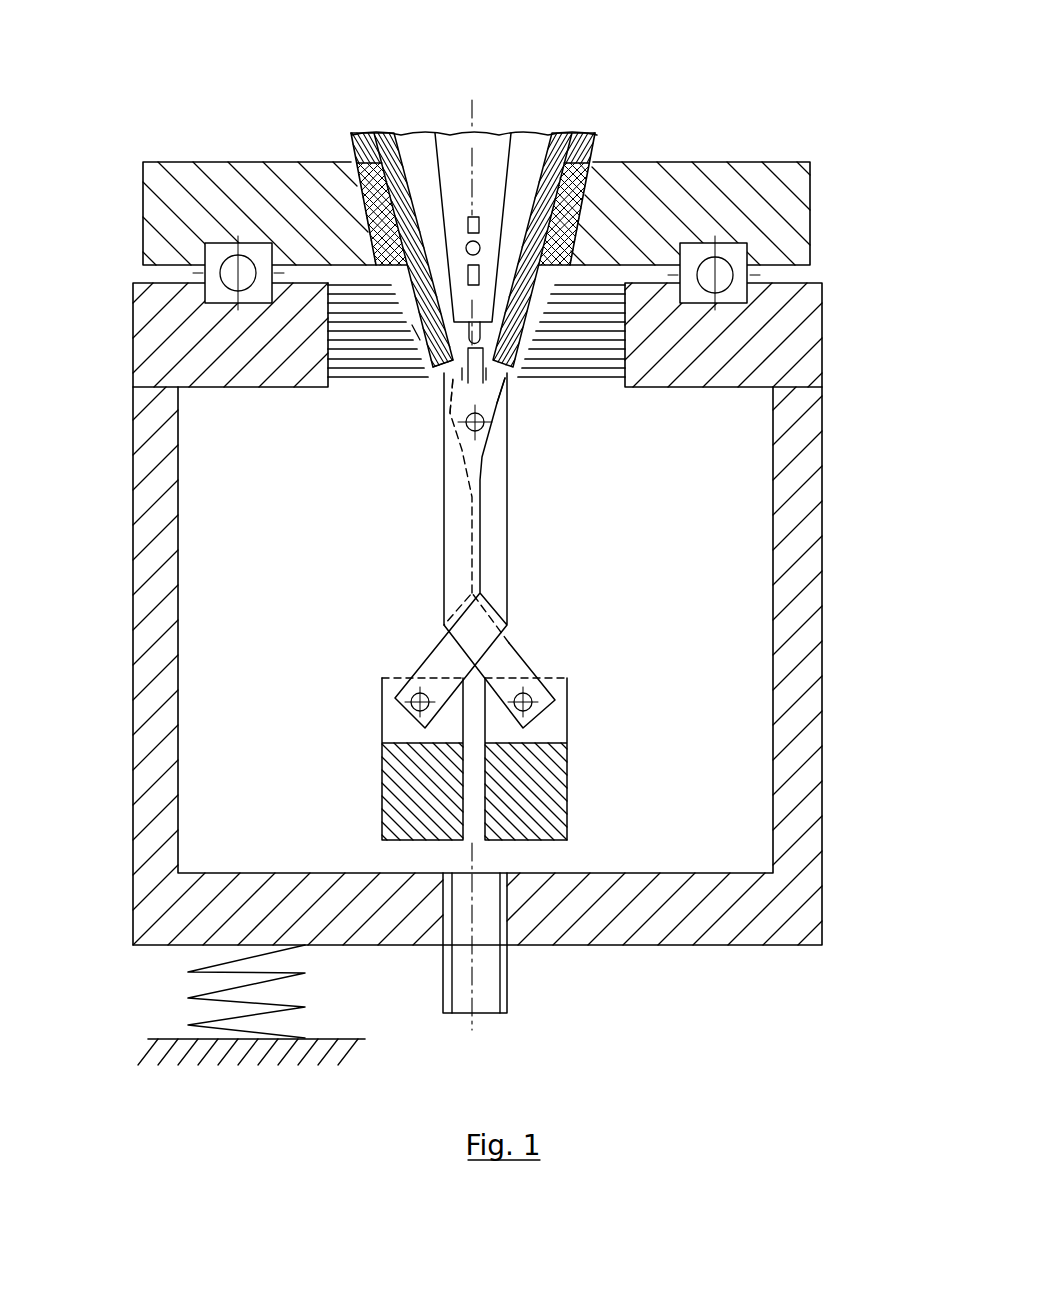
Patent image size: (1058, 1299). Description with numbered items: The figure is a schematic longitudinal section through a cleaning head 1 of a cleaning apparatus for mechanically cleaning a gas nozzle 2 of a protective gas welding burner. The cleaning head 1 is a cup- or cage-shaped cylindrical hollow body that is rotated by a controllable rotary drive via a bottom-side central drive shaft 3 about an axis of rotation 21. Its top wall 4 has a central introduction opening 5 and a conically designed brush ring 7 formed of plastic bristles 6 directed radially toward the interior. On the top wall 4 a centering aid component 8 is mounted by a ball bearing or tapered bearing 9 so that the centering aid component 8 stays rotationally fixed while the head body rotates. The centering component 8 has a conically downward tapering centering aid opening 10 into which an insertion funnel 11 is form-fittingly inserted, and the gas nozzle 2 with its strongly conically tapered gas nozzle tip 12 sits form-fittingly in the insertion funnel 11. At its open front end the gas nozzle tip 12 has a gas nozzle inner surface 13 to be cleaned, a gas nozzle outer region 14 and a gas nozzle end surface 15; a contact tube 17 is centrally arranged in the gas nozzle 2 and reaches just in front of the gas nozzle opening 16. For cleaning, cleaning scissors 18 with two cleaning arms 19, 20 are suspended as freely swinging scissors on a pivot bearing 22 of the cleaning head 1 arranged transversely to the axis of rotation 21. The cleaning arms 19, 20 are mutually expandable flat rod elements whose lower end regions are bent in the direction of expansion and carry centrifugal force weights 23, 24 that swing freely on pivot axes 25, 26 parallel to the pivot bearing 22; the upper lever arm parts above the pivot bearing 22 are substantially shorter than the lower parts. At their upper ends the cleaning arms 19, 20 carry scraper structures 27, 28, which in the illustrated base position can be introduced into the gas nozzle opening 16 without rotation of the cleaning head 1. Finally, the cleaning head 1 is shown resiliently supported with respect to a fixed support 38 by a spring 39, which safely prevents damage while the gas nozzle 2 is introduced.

The cleaning head 1 is at (845, 548).
The gas nozzle 2 is at (414, 98).
The central drive shaft 3 is at (487, 973).
The top wall 4 is at (785, 344).
The central introduction opening 5 is at (598, 400).
The plastic bristles 6 is at (355, 381).
The brush ring 7 is at (290, 333).
The centering aid component 8 is at (790, 207).
The ball bearing or tapered bearing 9 is at (719, 270).
The centering aid opening 10 is at (598, 213).
The insertion funnel 11 is at (575, 183).
The gas nozzle tip 12 is at (410, 165).
The gas nozzle inner surface 13 is at (441, 357).
The gas nozzle outer region 14 is at (418, 330).
The gas nozzle end surface 15 is at (452, 372).
The gas nozzle opening 16 is at (497, 372).
The contact tube 17 is at (498, 170).
The cleaning scissors 18 is at (614, 556).
The cleaning arm 19 is at (443, 567).
The cleaning arm 20 is at (497, 566).
The axis of rotation 21 is at (472, 967).
The pivot bearing 22 is at (481, 428).
The centrifugal force weight 23 is at (540, 794).
The centrifugal force weight 24 is at (410, 792).
The pivot axis 25 is at (536, 706).
The pivot axis 26 is at (408, 704).
The scraper structure 27 is at (441, 378).
The scraper structure 28 is at (498, 370).
The fixed support 38 is at (258, 1050).
The spring 39 is at (170, 997).